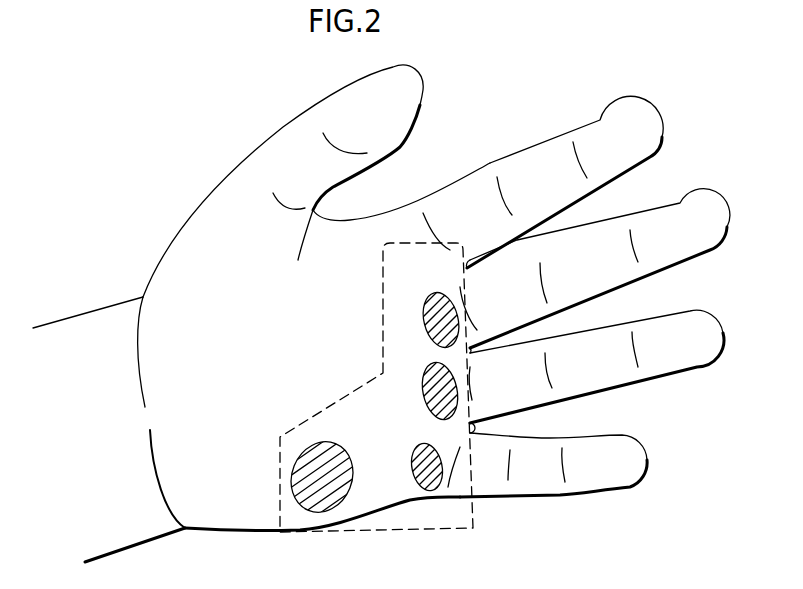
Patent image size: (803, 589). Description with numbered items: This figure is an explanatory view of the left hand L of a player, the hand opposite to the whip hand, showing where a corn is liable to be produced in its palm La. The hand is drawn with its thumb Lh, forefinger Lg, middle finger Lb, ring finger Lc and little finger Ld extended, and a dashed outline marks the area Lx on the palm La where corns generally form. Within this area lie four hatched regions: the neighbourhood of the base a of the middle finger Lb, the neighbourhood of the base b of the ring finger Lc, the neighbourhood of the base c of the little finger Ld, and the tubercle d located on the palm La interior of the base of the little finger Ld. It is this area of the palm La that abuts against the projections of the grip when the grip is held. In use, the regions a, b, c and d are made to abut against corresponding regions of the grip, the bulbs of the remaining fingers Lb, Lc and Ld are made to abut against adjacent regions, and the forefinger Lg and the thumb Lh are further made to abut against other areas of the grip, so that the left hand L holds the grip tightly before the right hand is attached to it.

The left hand L is at (381, 312).
The palm La is at (217, 337).
The thumb Lh is at (347, 100).
The forefinger Lg is at (613, 120).
The middle finger Lb is at (673, 207).
The ring finger Lc is at (688, 313).
The little finger Ld is at (620, 440).
The corn-prone area of the palm Lx is at (473, 513).
The base of the middle finger a is at (423, 320).
The base of the ring finger b is at (427, 393).
The base of the little finger c is at (427, 490).
The tubercle d is at (315, 513).